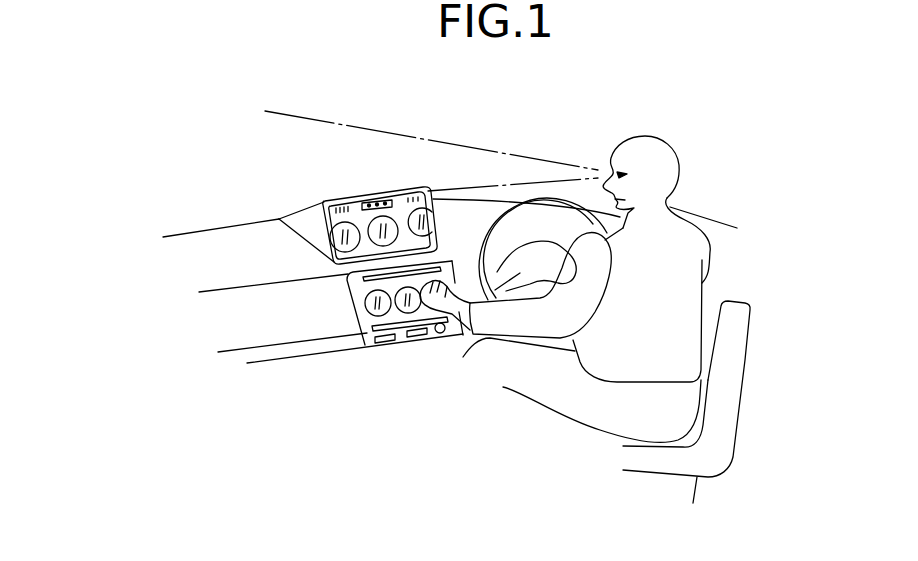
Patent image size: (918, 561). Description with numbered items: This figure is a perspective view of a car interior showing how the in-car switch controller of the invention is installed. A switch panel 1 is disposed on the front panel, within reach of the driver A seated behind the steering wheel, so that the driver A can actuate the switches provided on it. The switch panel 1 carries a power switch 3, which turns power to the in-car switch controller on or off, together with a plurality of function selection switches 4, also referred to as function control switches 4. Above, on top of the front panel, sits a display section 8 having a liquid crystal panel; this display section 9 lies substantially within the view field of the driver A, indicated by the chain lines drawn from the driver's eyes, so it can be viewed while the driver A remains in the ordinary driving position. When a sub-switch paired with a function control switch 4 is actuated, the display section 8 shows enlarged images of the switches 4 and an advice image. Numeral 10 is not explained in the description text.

The switch panel 1 is at (386, 345).
The power switch 3 is at (433, 334).
The function selection switches 4 is at (368, 317).
The display section 8 is at (348, 197).
The display section 9 is at (747, 343).
The instrument panel 10 is at (310, 312).
The driver A is at (710, 250).